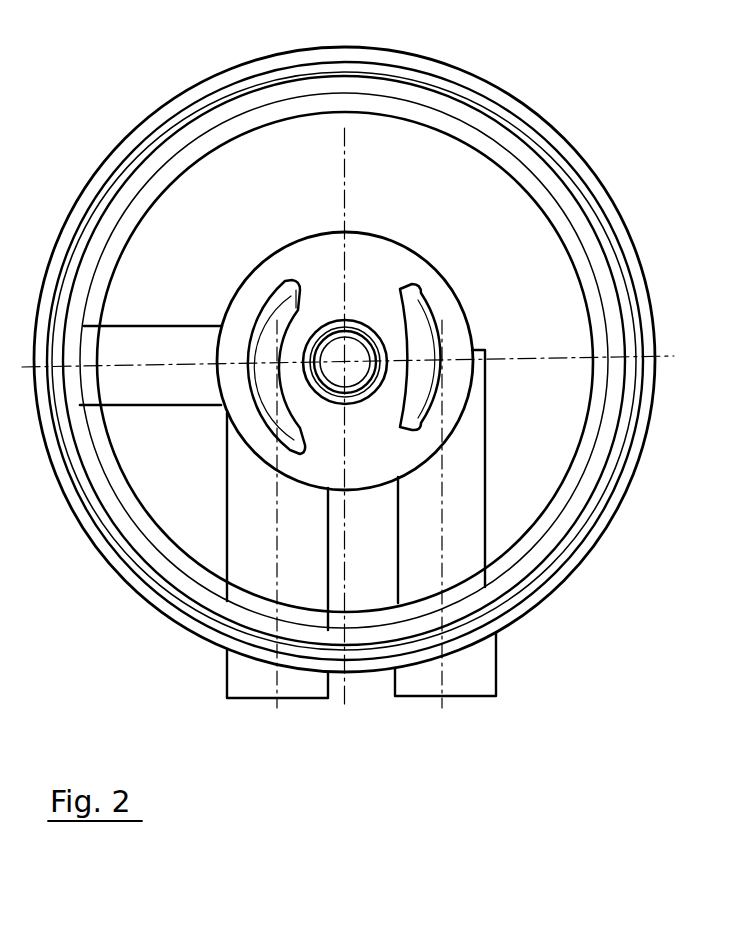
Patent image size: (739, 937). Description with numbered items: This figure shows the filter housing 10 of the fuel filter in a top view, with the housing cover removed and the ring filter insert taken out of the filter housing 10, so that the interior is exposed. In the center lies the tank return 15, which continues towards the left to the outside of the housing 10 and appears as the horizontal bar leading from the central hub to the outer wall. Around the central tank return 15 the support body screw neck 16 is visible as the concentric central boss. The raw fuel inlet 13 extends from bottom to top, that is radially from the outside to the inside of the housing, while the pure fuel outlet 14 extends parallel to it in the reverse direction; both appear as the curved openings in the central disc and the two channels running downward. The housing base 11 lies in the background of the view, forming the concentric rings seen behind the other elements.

The filter housing 10 is at (166, 86).
The housing base 11 is at (127, 500).
The raw fuel inlet 13 is at (423, 353).
The pure fuel outlet 14 is at (290, 302).
The tank return 15 is at (128, 352).
The support body screw neck 16 is at (363, 323).